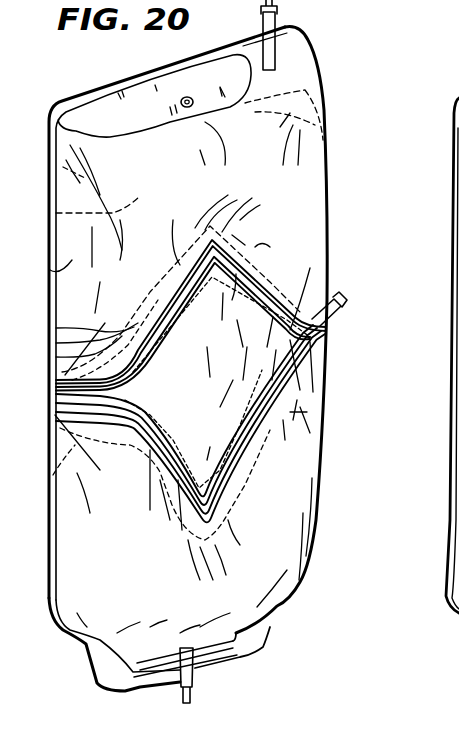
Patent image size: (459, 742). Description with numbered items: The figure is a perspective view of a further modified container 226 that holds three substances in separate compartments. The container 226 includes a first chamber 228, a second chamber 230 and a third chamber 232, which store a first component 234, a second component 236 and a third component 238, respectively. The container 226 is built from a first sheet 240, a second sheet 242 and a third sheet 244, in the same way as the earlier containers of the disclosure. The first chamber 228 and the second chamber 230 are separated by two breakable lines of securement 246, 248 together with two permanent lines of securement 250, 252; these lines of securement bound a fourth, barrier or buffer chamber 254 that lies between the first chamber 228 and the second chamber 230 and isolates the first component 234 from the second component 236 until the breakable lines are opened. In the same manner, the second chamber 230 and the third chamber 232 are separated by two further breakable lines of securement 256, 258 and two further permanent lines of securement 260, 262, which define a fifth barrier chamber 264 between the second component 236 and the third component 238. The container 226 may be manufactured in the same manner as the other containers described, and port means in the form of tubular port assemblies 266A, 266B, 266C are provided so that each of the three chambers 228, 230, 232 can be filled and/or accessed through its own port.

The container 226 is at (36, 120).
The first chamber 228 is at (292, 163).
The second chamber 230 is at (223, 420).
The third chamber 232 is at (92, 527).
The first component 234 is at (323, 129).
The second component 236 is at (324, 412).
The third component 238 is at (53, 477).
The first sheet 240 is at (50, 270).
The second sheet 242 is at (56, 213).
The third sheet 244 is at (53, 163).
The breakable line of securement 246 is at (56, 328).
The breakable line of securement 248 is at (56, 343).
The permanent line of securement 250 is at (56, 357).
The permanent line of securement 252 is at (60, 384).
The fourth, barrier or buffer chamber 254 is at (262, 291).
The breakable line of securement 256 is at (250, 457).
The breakable line of securement 258 is at (243, 477).
The permanent line of securement 260 is at (183, 522).
The permanent line of securement 262 is at (237, 507).
The fifth barrier chamber 264 is at (243, 437).
The tubular port assembly 266A is at (278, 27).
The tubular port assembly 266B is at (337, 316).
The tubular port assembly 266C is at (195, 685).